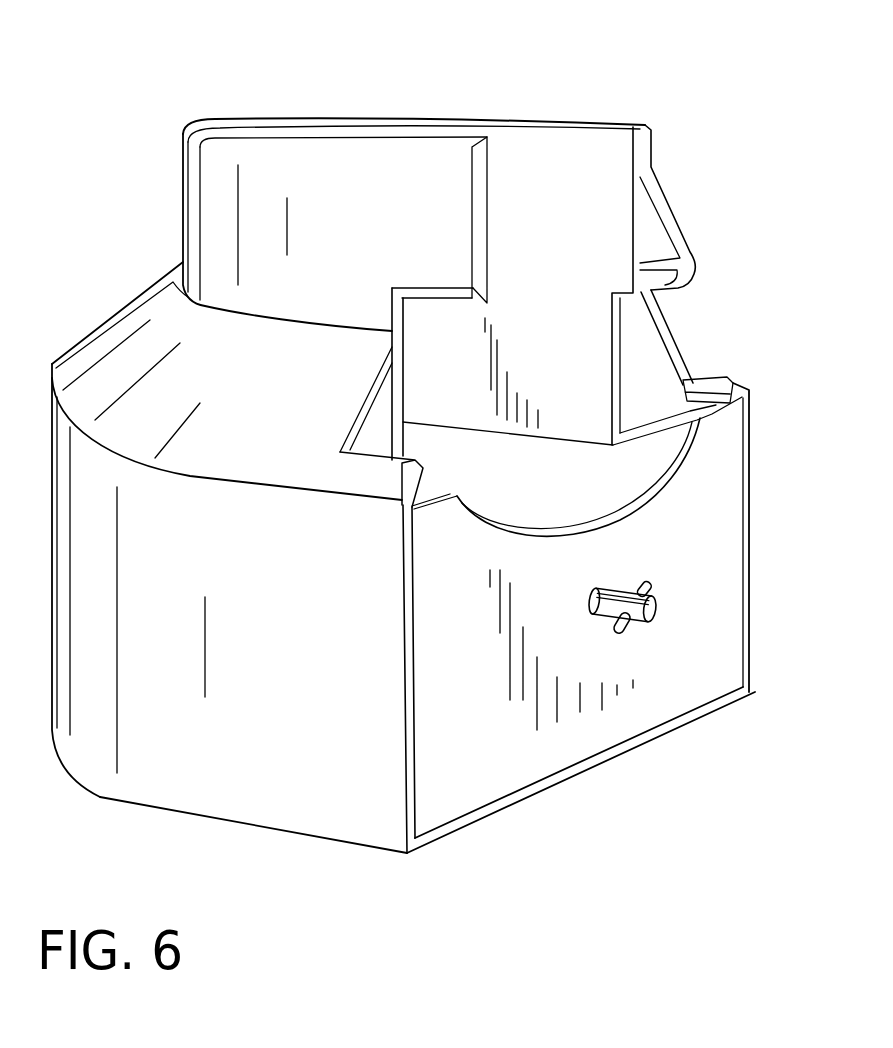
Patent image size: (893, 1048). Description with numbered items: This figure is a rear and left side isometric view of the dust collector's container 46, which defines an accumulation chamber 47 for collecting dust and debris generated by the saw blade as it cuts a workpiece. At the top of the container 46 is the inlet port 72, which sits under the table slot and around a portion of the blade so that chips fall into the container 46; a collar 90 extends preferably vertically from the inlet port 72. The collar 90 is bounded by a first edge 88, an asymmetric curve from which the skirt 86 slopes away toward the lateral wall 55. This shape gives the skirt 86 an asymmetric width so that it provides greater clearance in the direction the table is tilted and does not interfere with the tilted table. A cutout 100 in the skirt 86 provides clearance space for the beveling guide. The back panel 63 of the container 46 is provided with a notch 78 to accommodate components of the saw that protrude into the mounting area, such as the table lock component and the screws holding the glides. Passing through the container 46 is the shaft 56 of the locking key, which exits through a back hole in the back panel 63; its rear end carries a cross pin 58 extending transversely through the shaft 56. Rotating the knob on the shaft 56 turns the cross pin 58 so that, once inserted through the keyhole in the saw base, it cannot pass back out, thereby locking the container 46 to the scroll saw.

The container 46 is at (93, 763).
The accumulation chamber 47 is at (553, 468).
The lateral wall 55 is at (280, 790).
The shaft 56 is at (617, 600).
The cross pin 58 is at (635, 630).
The back panel 63 is at (528, 748).
The inlet port 72 is at (553, 152).
The notch 78 is at (625, 470).
The skirt 86 is at (250, 452).
The first edge 88 is at (200, 305).
The collar 90 is at (247, 192).
The cutout 100 is at (377, 440).